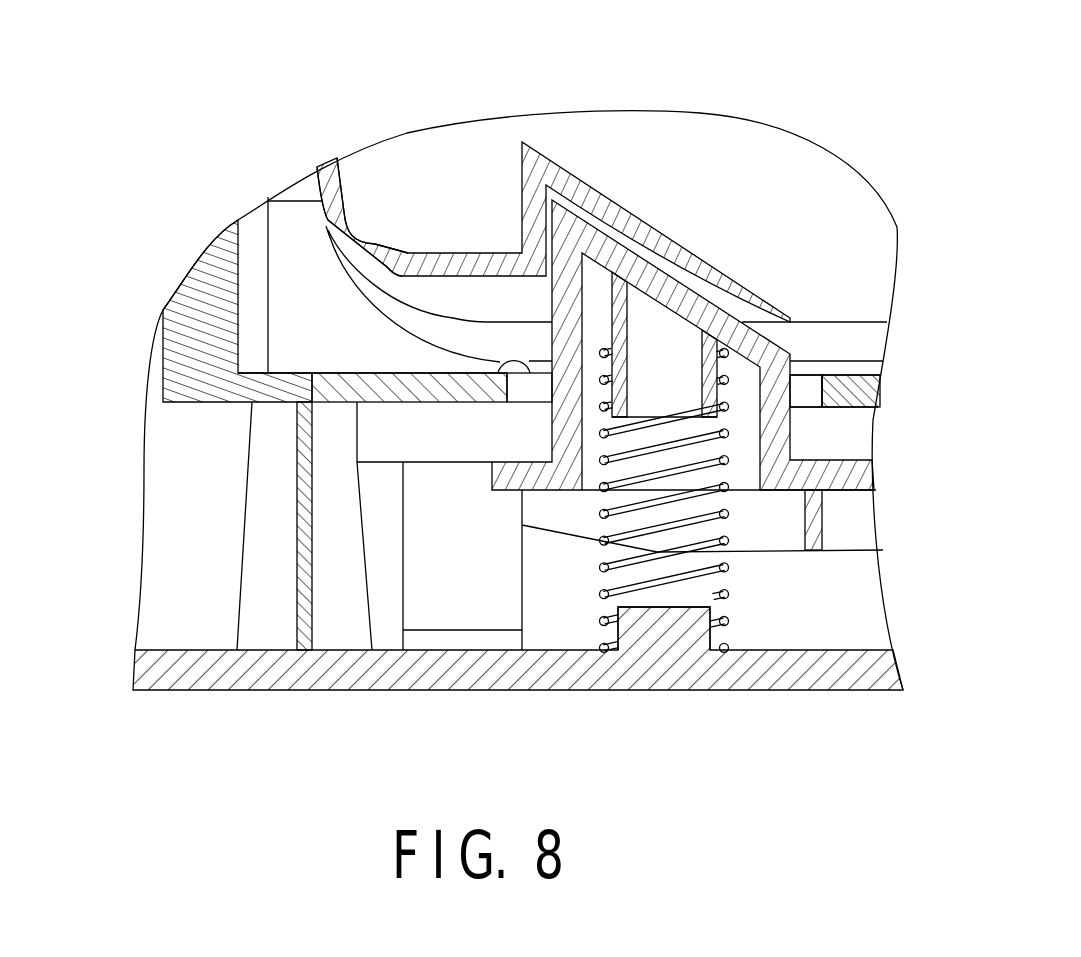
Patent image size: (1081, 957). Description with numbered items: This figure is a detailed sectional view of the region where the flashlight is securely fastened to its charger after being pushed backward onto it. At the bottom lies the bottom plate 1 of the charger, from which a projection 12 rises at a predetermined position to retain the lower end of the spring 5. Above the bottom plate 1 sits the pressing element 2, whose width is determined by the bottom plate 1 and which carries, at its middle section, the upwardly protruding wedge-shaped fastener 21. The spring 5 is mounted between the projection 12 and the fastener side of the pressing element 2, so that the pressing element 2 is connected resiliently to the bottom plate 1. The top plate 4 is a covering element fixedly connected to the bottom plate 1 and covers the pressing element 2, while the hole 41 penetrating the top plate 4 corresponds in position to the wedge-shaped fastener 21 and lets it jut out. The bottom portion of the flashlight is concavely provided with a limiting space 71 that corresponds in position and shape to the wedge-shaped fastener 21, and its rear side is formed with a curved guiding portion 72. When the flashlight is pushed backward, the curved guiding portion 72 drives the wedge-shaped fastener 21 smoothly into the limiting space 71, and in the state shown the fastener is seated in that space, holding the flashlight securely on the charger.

The bottom plate 1 is at (322, 673).
The projection 12 is at (700, 628).
The pressing element 2 is at (850, 473).
The wedge-shaped fastener 21 is at (690, 300).
The top plate 4 is at (860, 387).
The hole 41 is at (807, 387).
The spring 5 is at (726, 594).
The limiting space 71 is at (598, 226).
The curved guiding portion 72 is at (363, 243).